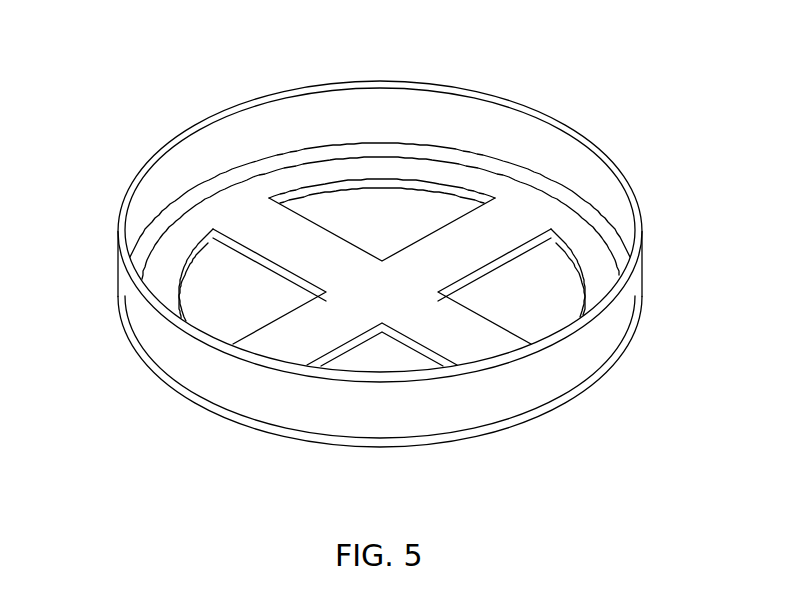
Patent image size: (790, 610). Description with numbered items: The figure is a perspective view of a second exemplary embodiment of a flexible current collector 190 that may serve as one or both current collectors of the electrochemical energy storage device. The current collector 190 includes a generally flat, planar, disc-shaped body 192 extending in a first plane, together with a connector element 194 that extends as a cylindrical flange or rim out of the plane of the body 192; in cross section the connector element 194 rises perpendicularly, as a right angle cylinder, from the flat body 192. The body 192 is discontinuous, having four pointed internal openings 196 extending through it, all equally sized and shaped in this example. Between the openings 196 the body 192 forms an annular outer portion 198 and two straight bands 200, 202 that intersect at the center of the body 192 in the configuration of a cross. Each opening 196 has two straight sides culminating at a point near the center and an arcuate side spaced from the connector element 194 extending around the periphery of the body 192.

The flexible current collector 190 is at (387, 256).
The disc-shaped body 192 is at (535, 204).
The connector element 194 is at (361, 88).
The openings 196 is at (333, 207).
The annular outer portion 198 is at (431, 172).
The straight band 200 is at (431, 247).
The straight band 202 is at (247, 220).